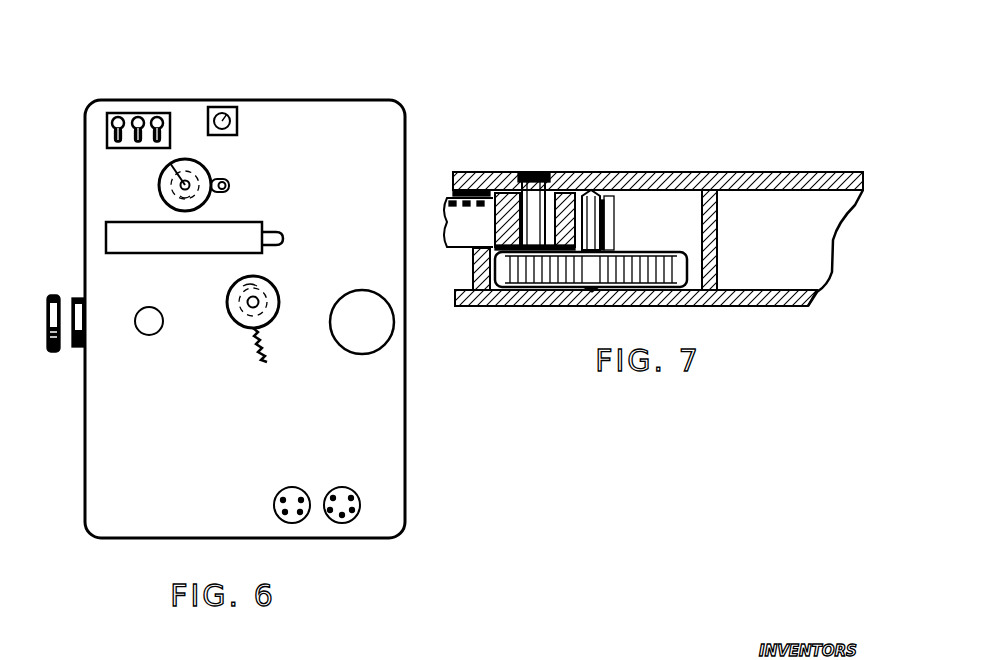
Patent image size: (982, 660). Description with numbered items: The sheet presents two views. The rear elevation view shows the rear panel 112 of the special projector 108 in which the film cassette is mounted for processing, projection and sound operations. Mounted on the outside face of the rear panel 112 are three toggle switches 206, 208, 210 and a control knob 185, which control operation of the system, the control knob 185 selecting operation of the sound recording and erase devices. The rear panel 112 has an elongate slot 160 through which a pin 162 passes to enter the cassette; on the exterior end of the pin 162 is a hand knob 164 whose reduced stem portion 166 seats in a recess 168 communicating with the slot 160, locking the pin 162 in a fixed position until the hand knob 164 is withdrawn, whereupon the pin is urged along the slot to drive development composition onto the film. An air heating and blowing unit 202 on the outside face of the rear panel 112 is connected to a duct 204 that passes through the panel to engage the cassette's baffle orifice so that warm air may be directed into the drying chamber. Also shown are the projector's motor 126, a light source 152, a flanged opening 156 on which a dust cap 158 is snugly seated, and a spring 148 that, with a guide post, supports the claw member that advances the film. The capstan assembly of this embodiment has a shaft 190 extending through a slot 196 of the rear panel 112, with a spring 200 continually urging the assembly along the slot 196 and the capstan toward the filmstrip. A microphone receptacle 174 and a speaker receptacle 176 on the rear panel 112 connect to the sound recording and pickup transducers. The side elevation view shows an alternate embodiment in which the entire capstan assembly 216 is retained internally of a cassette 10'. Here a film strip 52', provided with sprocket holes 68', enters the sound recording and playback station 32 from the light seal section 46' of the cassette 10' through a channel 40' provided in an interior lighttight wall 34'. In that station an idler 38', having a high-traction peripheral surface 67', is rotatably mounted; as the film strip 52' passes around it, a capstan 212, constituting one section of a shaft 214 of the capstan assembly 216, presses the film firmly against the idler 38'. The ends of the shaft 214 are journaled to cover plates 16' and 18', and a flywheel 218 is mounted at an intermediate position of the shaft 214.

In FIG. 6, the projector 108 is at (342, 101).
In FIG. 6, the toggle switch 206 is at (119, 118).
In FIG. 6, the toggle switch 208 is at (137, 118).
In FIG. 6, the toggle switch 210 is at (160, 116).
In FIG. 6, the control knob 185 is at (227, 116).
In FIG. 6, the pin 162 is at (171, 177).
In FIG. 6, the recess 168 is at (161, 191).
In FIG. 6, the reduced stem portion 166 is at (210, 164).
In FIG. 6, the hand knob 164 is at (227, 178).
In FIG. 6, the elongate slot 160 is at (224, 188).
In FIG. 6, the air heating and blowing unit 202 is at (173, 253).
In FIG. 6, the duct 204 is at (274, 233).
In FIG. 6, the spring 148 is at (281, 296).
In FIG. 6, the shaft 190 is at (251, 300).
In FIG. 6, the slot 196 is at (266, 277).
In FIG. 6, the spring 200 is at (268, 340).
In FIG. 6, the motor 126 is at (365, 288).
In FIG. 6, the light source 152 is at (148, 337).
In FIG. 6, the dust cap 158 is at (55, 293).
In FIG. 6, the flanged opening 156 is at (78, 350).
In FIG. 6, the rear panel 112 is at (189, 441).
In FIG. 6, the microphone receptacle 174 is at (292, 495).
In FIG. 6, the speaker receptacle 176 is at (341, 495).
In FIG. 7, the cassette 10' is at (543, 112).
In FIG. 7, the cover plate 18' is at (658, 224).
In FIG. 7, the cover plate 16' is at (636, 313).
In FIG. 7, the sound recording and playback station 32 is at (720, 209).
In FIG. 7, the interior lighttight wall 34' is at (602, 251).
In FIG. 7, the light seal section 46' is at (642, 272).
In FIG. 7, the channel 40' is at (467, 164).
In FIG. 7, the sprocket holes 68' is at (454, 209).
In FIG. 7, the film strip 52' is at (524, 197).
In FIG. 7, the peripheral surface 67' is at (532, 181).
In FIG. 7, the idler 38' is at (544, 192).
In FIG. 7, the capstan 212 is at (603, 228).
In FIG. 7, the shaft 214 is at (602, 243).
In FIG. 7, the capstan assembly 216 is at (612, 210).
In FIG. 7, the flywheel 218 is at (688, 272).